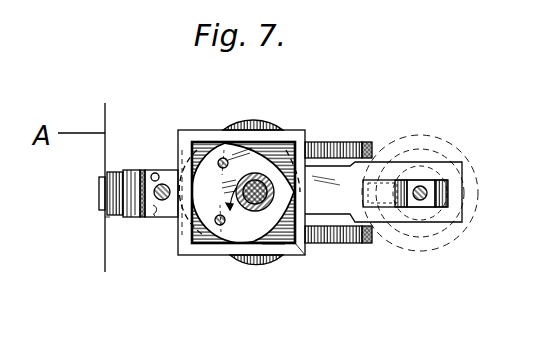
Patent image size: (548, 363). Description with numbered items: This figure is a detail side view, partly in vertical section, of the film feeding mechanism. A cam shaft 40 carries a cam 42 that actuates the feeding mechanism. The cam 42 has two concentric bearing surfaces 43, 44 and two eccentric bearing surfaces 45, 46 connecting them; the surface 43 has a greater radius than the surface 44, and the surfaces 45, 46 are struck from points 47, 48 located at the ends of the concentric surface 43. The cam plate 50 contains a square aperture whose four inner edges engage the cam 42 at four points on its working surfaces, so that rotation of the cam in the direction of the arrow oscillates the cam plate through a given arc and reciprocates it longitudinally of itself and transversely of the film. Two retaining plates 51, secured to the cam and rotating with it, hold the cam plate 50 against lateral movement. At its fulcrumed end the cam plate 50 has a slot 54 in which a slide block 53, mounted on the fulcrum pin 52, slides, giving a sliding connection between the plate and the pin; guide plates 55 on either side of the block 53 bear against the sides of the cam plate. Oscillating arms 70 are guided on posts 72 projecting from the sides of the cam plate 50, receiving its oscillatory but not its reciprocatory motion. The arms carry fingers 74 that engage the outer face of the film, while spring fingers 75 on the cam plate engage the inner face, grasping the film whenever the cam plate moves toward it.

The cam shaft 40 is at (263, 176).
The cam 42 is at (248, 232).
The concentric bearing surface 43 is at (222, 238).
The concentric bearing surface 44 is at (298, 168).
The eccentric bearing surface 45 is at (270, 250).
The eccentric bearing surface 46 is at (258, 131).
The point 47 is at (213, 141).
The point 48 is at (216, 243).
The cam plate 50 is at (178, 128).
The retaining plates 51 is at (303, 252).
The fulcrum pin 52 is at (422, 190).
The slide block 53 is at (430, 206).
The slot 54 is at (447, 202).
The guide plates 55 is at (398, 198).
The oscillating arms 70 is at (374, 141).
The posts 72 is at (150, 218).
The fingers 74 is at (99, 193).
The fingers 75 is at (108, 217).